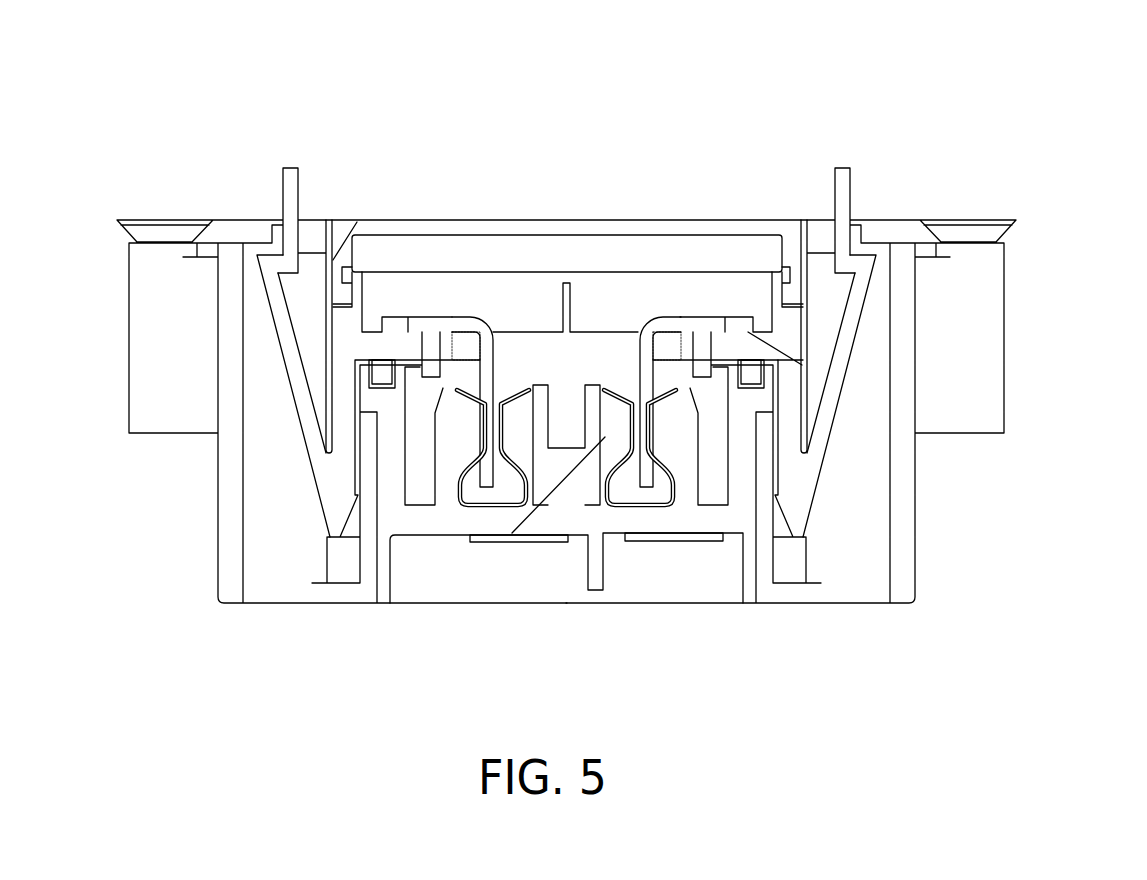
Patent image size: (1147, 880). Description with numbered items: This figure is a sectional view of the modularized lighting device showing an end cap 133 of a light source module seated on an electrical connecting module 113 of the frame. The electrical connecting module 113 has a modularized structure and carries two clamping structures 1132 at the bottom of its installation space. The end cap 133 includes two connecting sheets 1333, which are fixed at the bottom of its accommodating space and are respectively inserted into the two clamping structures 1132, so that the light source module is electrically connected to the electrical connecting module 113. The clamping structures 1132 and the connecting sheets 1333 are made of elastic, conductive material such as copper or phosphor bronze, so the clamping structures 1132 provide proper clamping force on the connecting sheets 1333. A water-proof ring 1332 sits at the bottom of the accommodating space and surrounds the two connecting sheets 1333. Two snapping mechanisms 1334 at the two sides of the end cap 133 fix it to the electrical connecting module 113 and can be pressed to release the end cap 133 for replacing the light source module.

The electrical connecting module 113 is at (232, 587).
The end cap 133 is at (610, 230).
The connecting sheet 1333 is at (463, 323).
The snapping mechanism 1334 is at (308, 437).
The water-proof ring 1332 is at (755, 377).
The clamping structure 1132 is at (457, 482).